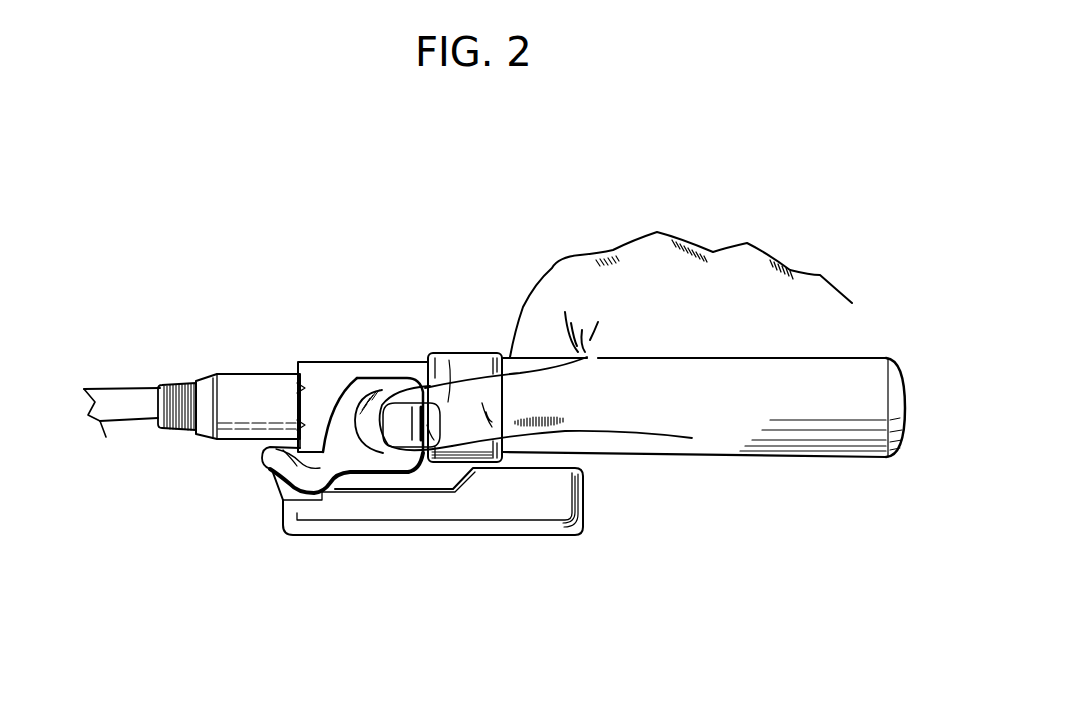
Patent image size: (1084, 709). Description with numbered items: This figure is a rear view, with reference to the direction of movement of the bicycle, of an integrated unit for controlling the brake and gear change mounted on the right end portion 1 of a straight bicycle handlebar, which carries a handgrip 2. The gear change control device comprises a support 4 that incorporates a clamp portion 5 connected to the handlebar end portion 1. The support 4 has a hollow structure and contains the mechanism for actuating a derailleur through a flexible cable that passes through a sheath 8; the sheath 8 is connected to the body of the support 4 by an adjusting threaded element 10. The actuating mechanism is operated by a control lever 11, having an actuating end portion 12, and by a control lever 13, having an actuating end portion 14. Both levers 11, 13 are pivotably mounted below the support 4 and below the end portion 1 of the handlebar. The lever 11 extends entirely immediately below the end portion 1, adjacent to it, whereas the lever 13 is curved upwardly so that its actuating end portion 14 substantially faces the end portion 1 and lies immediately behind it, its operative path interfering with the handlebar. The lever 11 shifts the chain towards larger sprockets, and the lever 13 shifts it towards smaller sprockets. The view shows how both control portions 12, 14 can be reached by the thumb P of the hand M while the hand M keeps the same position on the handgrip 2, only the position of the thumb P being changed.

The end portion of handlebar 1 is at (372, 370).
The handgrip 2 is at (812, 437).
The support 4 is at (243, 386).
The clamp portion 5 is at (480, 352).
The sheath 8 is at (135, 400).
The adjusting threaded element 10 is at (177, 430).
The control lever 11 is at (502, 544).
The actuating end portion 12 is at (540, 509).
The control lever 13 is at (331, 403).
The actuating end portion 14 is at (370, 443).
The hand M is at (572, 268).
The thumb P is at (449, 362).